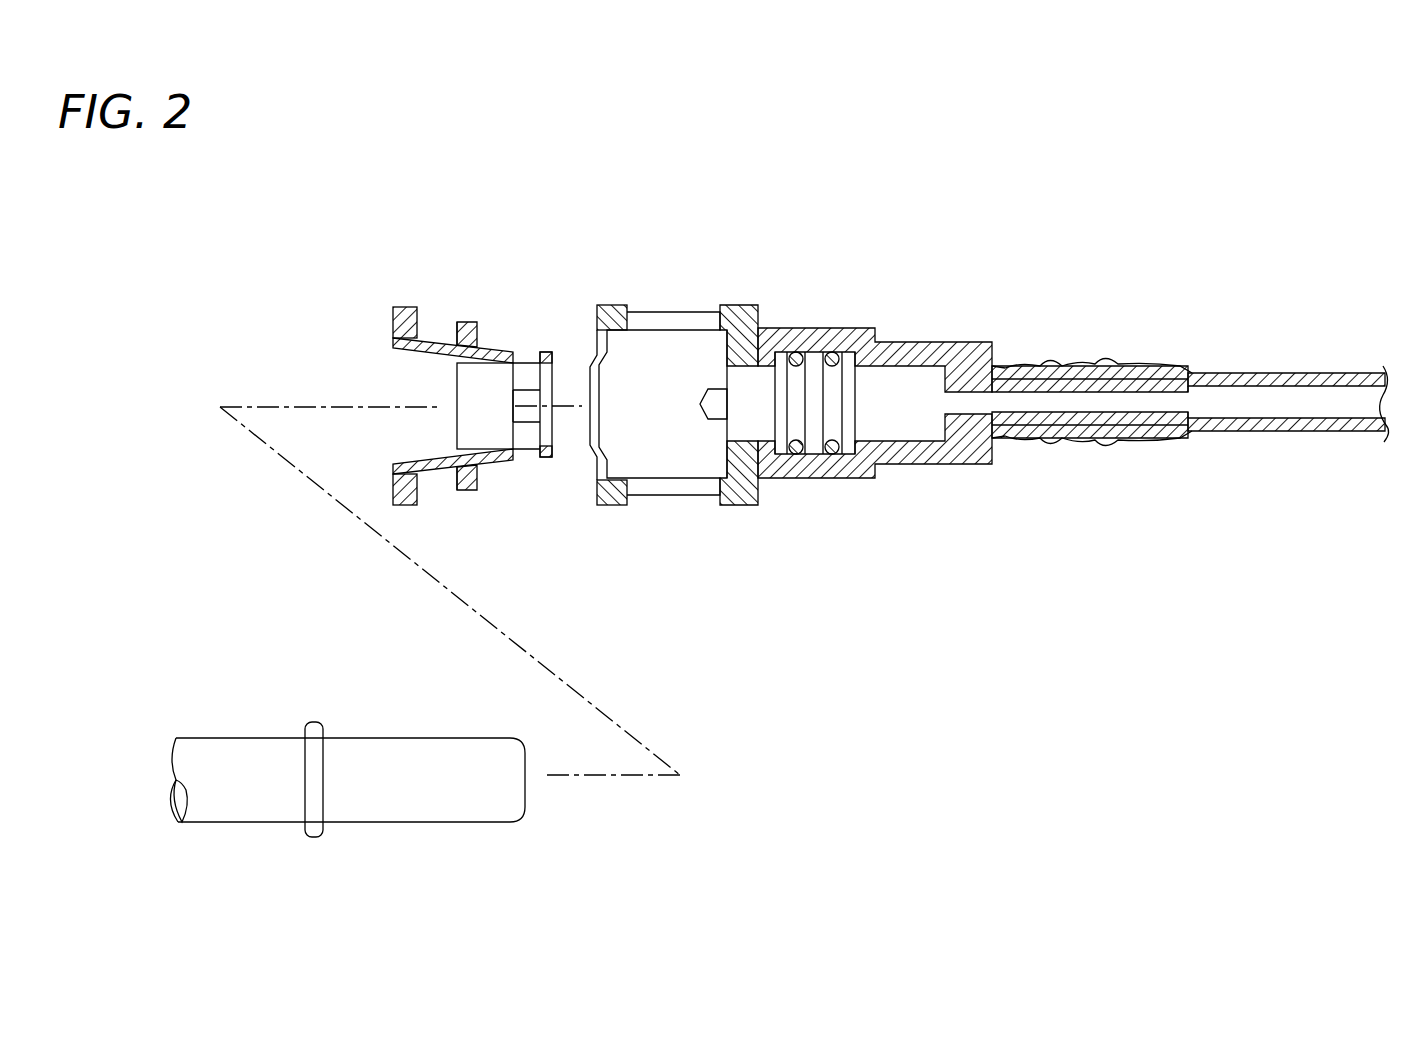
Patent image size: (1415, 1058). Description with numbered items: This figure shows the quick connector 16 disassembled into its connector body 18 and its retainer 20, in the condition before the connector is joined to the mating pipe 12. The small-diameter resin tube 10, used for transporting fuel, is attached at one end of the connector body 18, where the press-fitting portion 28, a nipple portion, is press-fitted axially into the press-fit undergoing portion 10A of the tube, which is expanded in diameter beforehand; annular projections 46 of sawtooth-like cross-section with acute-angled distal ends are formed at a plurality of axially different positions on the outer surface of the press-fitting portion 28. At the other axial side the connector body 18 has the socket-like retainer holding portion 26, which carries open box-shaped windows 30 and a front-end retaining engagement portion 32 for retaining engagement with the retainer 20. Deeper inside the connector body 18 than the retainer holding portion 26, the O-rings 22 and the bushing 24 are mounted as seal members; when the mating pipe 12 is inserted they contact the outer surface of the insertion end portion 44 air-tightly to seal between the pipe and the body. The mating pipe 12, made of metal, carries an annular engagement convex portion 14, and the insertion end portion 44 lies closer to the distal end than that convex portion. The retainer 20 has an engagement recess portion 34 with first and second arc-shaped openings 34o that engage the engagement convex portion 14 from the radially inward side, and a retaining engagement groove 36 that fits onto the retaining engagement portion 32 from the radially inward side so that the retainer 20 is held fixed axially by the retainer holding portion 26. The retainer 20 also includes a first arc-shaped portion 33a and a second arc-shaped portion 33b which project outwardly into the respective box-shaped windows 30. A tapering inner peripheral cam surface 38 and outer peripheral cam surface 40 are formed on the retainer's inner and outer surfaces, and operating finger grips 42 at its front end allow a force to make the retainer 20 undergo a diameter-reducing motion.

The resin tube 10 is at (1190, 402).
The press-fit undergoing portion 10A is at (1060, 446).
The mating pipe 12 is at (347, 761).
The engagement convex portion 14 is at (312, 838).
The quick connector 16 is at (674, 352).
The connector body 18 is at (856, 382).
The retainer 20 is at (429, 385).
The O-rings 22 is at (830, 468).
The bushing 24 is at (752, 480).
The retainer holding portion 26 is at (745, 302).
The press-fitting portion 28 is at (1100, 442).
The box-shaped windows 30 is at (722, 308).
The retaining engagement portion 32 is at (608, 303).
The first arc-shaped portion 33a is at (462, 492).
The second arc-shaped portion 33b is at (468, 310).
The engagement recess portion 34 is at (545, 350).
The arc-shaped openings 34o is at (520, 462).
The retaining engagement groove 36 is at (437, 320).
The inner peripheral cam surface 38 is at (458, 366).
The outer peripheral cam surface 40 is at (480, 334).
The operating finger grips 42 is at (395, 322).
The insertion end portion 44 is at (455, 797).
The annular projections 46 is at (1055, 362).